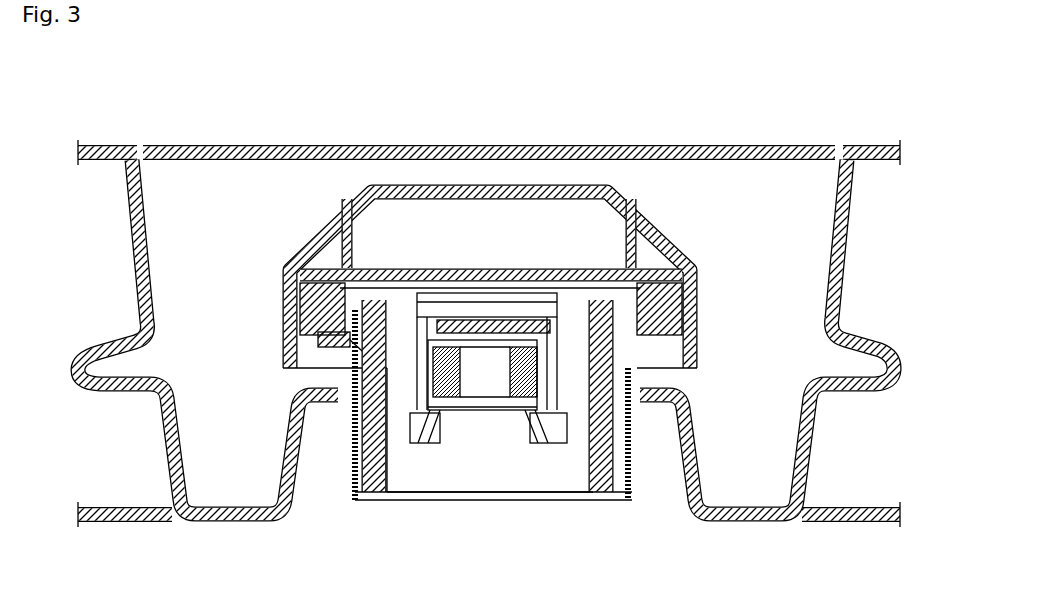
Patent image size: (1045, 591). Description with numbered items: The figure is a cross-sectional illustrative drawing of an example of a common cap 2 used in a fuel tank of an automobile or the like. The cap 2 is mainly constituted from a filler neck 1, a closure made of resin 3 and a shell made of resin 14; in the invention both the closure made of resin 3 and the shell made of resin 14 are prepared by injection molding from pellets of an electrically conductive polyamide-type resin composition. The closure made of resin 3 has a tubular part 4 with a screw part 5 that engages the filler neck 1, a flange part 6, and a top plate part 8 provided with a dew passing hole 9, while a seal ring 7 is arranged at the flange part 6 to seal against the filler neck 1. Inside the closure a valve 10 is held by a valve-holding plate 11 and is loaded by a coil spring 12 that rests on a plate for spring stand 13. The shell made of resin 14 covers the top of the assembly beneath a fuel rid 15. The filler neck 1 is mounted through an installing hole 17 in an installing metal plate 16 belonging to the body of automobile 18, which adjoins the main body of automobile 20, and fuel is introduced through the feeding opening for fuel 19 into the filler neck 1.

The filler neck 1 is at (357, 478).
The cap 2 is at (700, 234).
The closure made of resin 3 is at (370, 475).
The tubular part 4 is at (358, 410).
The screw part 5 is at (355, 449).
The flange part 6 is at (283, 322).
The seal ring 7 is at (688, 322).
The top plate part 8 is at (555, 318).
The dew passing hole 9 is at (492, 320).
The valve 10 is at (487, 385).
The valve-holding plate 11 is at (347, 376).
The coil spring 12 is at (547, 400).
The plate for spring stand 13 is at (590, 405).
The shell made of resin 14 is at (370, 186).
The fuel rid 15 is at (730, 143).
The installing metal plate 16 is at (892, 388).
The installing hole 17 is at (645, 400).
The body of automobile 18 is at (877, 142).
The feeding opening for fuel 19 is at (232, 180).
The main body of automobile 20 is at (870, 522).